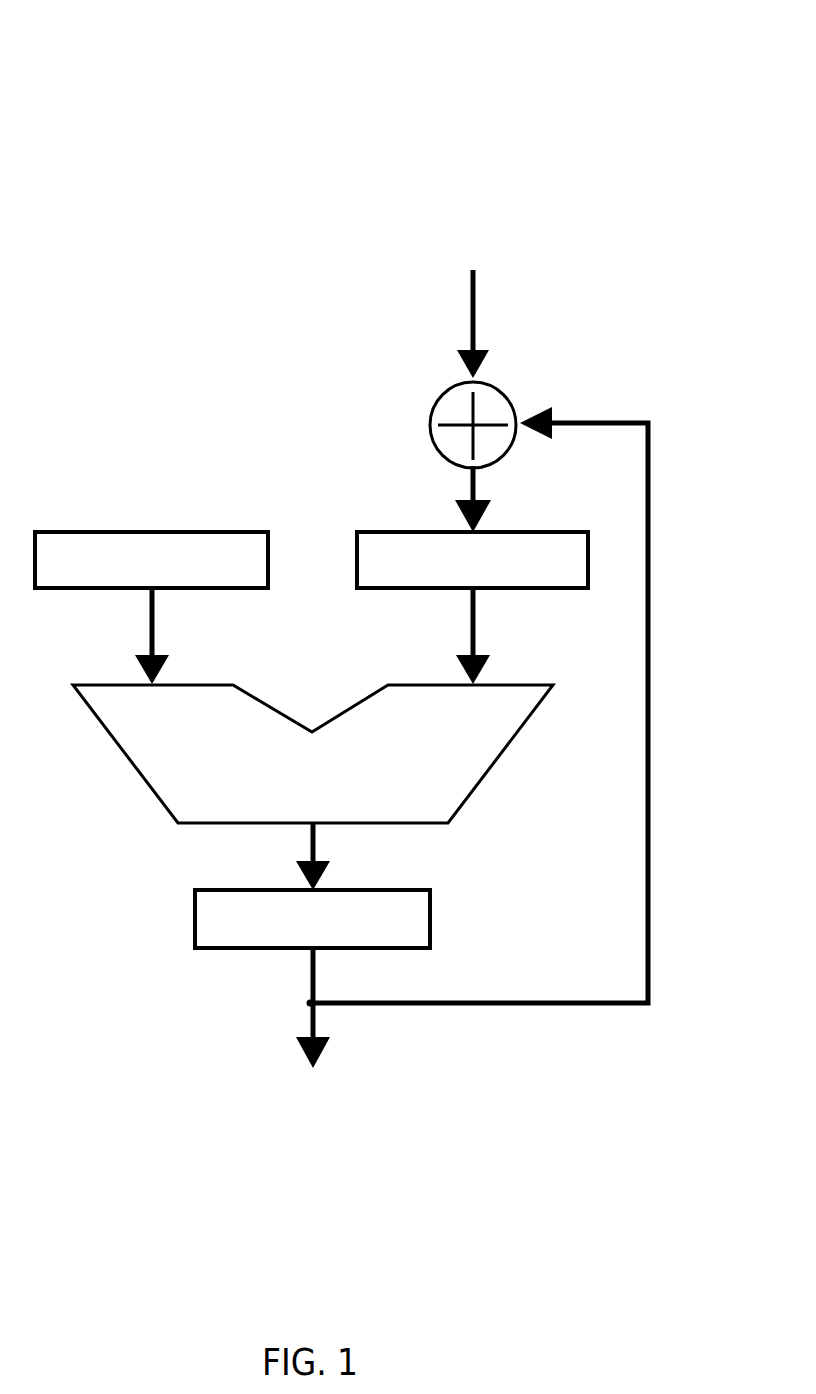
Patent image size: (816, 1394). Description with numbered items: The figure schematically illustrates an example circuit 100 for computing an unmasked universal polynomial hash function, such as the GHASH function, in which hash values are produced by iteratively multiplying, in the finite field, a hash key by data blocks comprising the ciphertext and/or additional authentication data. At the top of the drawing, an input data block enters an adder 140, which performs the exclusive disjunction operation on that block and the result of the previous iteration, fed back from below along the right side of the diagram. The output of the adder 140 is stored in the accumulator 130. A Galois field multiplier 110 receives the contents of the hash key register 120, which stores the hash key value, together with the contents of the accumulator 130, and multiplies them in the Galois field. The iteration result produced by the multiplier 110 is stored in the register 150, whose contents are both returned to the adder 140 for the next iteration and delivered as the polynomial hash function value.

The circuit 100 is at (667, 58).
The Galois field multiplier 110 is at (385, 782).
The hash key register 120 is at (170, 583).
The accumulator 130 is at (568, 575).
The adder 140 is at (425, 417).
The register 150 is at (390, 930).